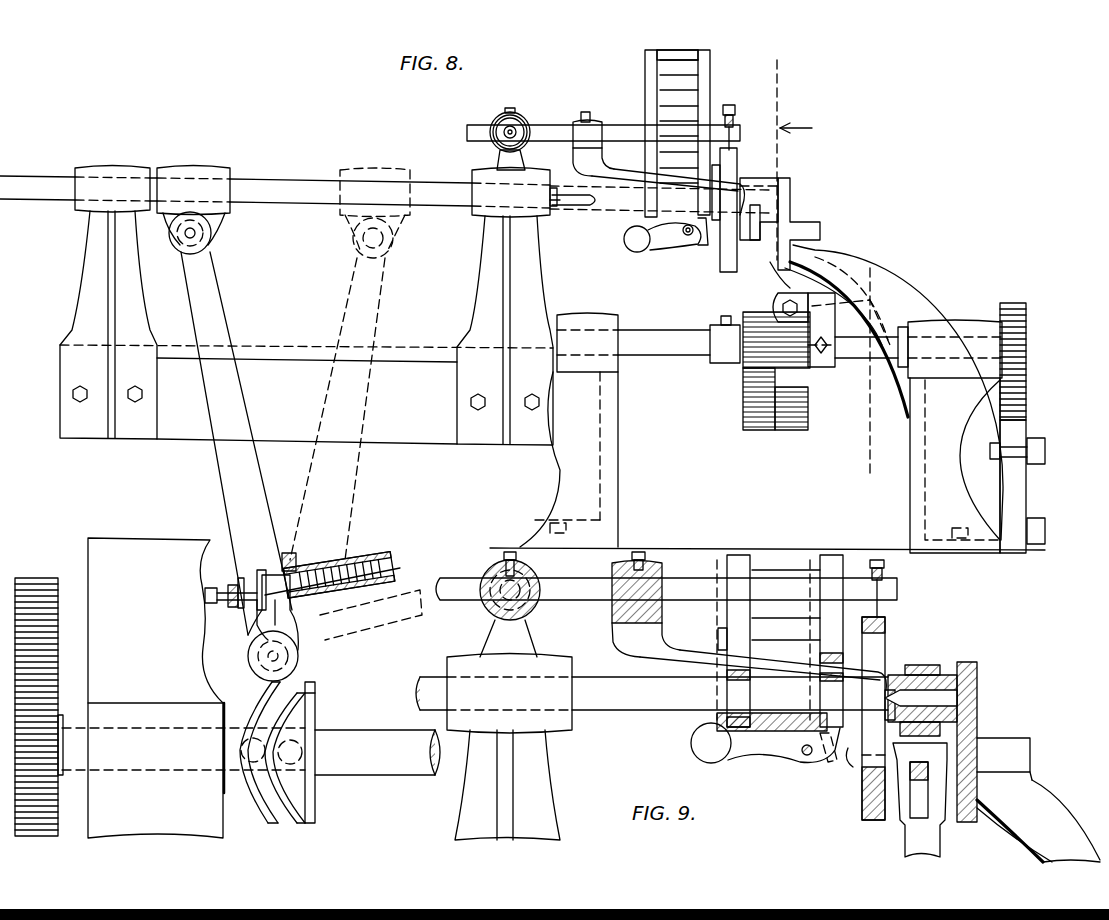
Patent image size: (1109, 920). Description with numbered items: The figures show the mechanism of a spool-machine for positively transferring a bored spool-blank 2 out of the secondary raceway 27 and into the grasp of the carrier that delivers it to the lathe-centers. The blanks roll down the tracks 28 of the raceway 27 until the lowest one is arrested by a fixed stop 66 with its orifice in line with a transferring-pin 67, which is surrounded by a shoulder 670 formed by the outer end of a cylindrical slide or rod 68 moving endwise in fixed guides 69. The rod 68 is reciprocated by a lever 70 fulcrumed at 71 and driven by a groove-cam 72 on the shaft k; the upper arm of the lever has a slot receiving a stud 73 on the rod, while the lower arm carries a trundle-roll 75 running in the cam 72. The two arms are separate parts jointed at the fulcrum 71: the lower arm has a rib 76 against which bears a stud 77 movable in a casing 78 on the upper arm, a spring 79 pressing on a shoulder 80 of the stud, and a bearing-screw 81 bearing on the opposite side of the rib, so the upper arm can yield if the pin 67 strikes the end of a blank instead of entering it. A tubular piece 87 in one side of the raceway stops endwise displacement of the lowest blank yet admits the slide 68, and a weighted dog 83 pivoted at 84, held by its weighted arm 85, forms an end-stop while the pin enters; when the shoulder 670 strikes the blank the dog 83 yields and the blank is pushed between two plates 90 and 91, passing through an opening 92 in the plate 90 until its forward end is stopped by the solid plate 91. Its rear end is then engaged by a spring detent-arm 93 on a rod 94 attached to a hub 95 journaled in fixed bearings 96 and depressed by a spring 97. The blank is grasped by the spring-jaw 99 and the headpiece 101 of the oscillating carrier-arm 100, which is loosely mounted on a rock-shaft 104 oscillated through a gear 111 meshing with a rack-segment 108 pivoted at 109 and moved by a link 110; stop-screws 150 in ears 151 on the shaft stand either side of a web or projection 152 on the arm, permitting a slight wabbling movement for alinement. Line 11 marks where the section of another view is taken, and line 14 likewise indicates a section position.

In FIG. 8, the spool-blank 2 is at (660, 80).
In FIG. 9, the spool-blank 2 is at (760, 575).
In FIG. 8, the section line 11 is at (826, 272).
In FIG. 8, the section line 14 is at (218, 215).
In FIG. 8, the secondary raceway 27 is at (705, 76).
In FIG. 9, the secondary raceway 27 is at (727, 605).
In FIG. 8, the blank-supporting shoulder or track 28 is at (677, 48).
In FIG. 9, the blank-supporting shoulder or track 28 is at (727, 570).
In FIG. 8, the fixed stop 66 is at (650, 200).
In FIG. 8, the transferring-pin 67 is at (580, 205).
In FIG. 9, the transferring-pin 67 is at (935, 670).
In FIG. 8, the cylindrical slide or rod 68 is at (445, 196).
In FIG. 9, the cylindrical slide or rod 68 is at (667, 710).
In FIG. 8, the fixed guides 69 is at (108, 170).
In FIG. 9, the fixed guides 69 is at (509, 676).
In FIG. 8, the lever 70 is at (230, 473).
In FIG. 8, the fulcrum 71 is at (280, 656).
In FIG. 8, the groove-cam 72 is at (296, 790).
In FIG. 8, the stud 73 is at (198, 235).
In FIG. 8, the trundle-roll 75 is at (316, 735).
In FIG. 8, the rib 76 is at (258, 612).
In FIG. 8, the stud 77 is at (276, 575).
In FIG. 8, the casing 78 is at (355, 562).
In FIG. 8, the spring 79 is at (328, 560).
In FIG. 8, the shoulder 80 is at (290, 555).
In FIG. 8, the bearing-screw 81 is at (220, 585).
In FIG. 8, the weighted dog 83 is at (704, 240).
In FIG. 9, the weighted dog 83 is at (836, 762).
In FIG. 8, the pivot 84 is at (686, 236).
In FIG. 9, the pivot 84 is at (806, 757).
In FIG. 8, the weighted arm 85 is at (660, 242).
In FIG. 9, the weighted arm 85 is at (766, 745).
In FIG. 8, the tubular piece 87 is at (640, 181).
In FIG. 9, the tubular piece 87 is at (700, 661).
In FIG. 8, the plate 90 is at (727, 268).
In FIG. 9, the plate 90 is at (862, 800).
In FIG. 8, the plate 91 is at (800, 270).
In FIG. 9, the plate 91 is at (977, 790).
In FIG. 9, the opening 92 is at (872, 737).
In FIG. 8, the spring detent-arm 93 is at (716, 180).
In FIG. 9, the spring detent-arm 93 is at (880, 668).
In FIG. 8, the rod 94 is at (568, 126).
In FIG. 9, the rod 94 is at (582, 590).
In FIG. 8, the hub 95 is at (516, 122).
In FIG. 9, the hub 95 is at (525, 572).
In FIG. 8, the fixed bearings 96 is at (512, 160).
In FIG. 8, the spring 97 is at (735, 110).
In FIG. 8, the spring-jaw 99 is at (760, 220).
In FIG. 8, the oscillating carrier-arm 100 is at (752, 298).
In FIG. 8, the headpiece 101 is at (760, 178).
In FIG. 8, the rock-shaft 104 is at (678, 348).
In FIG. 8, the rack-segment 108 is at (1025, 402).
In FIG. 8, the pivot 109 is at (1042, 527).
In FIG. 8, the link 110 is at (1040, 443).
In FIG. 8, the gear 111 is at (1026, 335).
In FIG. 8, the stop-screws 150 is at (840, 280).
In FIG. 8, the ears 151 is at (915, 290).
In FIG. 8, the web or projection 152 is at (860, 285).
In FIG. 8, the shoulder 670 is at (552, 210).
In FIG. 8, the shaft k is at (402, 760).